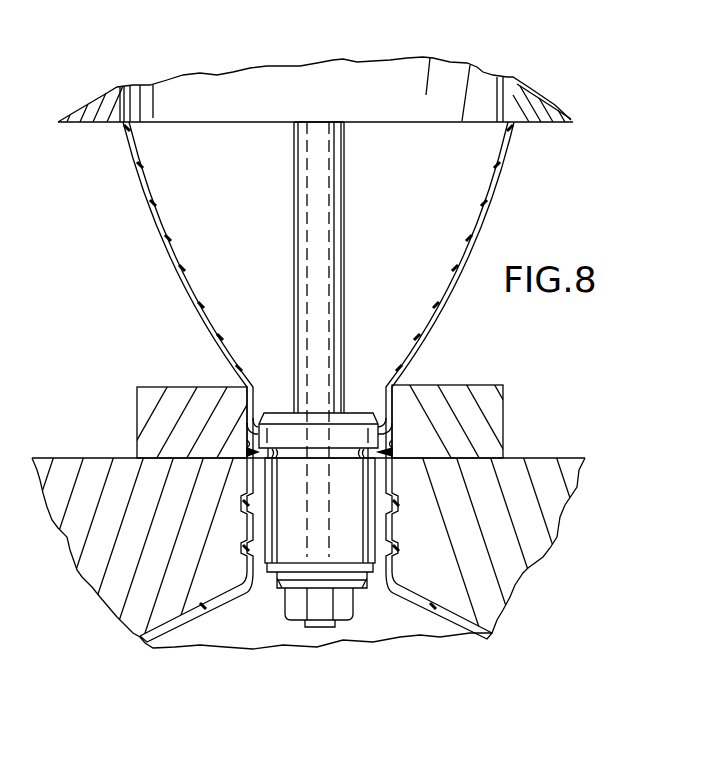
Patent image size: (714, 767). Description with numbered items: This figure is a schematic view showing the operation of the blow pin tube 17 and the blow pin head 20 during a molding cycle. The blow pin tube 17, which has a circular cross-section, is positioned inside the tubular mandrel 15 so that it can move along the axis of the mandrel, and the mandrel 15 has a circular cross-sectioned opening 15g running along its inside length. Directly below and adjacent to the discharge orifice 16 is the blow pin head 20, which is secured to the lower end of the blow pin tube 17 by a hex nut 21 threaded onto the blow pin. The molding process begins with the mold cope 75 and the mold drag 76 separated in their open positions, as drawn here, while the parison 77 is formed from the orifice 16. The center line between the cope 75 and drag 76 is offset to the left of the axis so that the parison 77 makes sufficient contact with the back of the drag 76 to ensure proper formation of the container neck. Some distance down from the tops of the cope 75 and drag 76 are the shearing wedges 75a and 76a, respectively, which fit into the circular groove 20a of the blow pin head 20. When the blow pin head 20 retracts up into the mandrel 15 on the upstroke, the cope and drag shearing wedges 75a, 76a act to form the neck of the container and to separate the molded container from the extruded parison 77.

The mandrel 15 is at (260, 102).
The opening 15g is at (343, 122).
The discharge orifice 16 is at (128, 126).
The blow pin tube 17 is at (295, 257).
The blow pin head 20 is at (303, 528).
The circular groove 20a is at (348, 455).
The hex nut 21 is at (288, 604).
The mold cope 75 is at (503, 404).
The cope shearing wedge 75a is at (373, 455).
The mold drag 76 is at (137, 424).
The drag shearing wedge 76a is at (258, 428).
The parison 77 is at (177, 265).